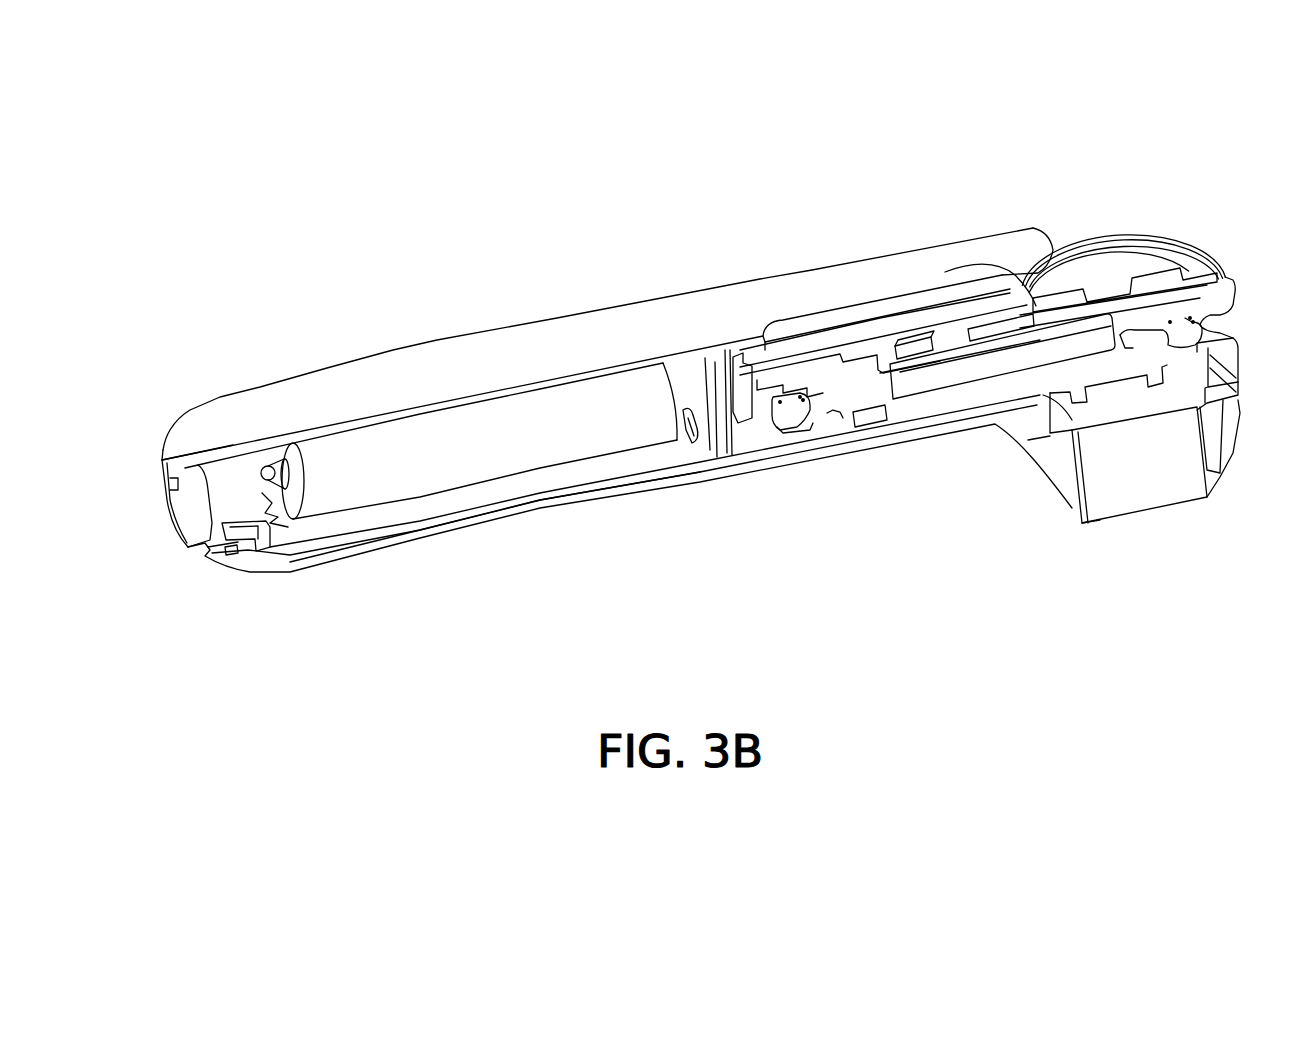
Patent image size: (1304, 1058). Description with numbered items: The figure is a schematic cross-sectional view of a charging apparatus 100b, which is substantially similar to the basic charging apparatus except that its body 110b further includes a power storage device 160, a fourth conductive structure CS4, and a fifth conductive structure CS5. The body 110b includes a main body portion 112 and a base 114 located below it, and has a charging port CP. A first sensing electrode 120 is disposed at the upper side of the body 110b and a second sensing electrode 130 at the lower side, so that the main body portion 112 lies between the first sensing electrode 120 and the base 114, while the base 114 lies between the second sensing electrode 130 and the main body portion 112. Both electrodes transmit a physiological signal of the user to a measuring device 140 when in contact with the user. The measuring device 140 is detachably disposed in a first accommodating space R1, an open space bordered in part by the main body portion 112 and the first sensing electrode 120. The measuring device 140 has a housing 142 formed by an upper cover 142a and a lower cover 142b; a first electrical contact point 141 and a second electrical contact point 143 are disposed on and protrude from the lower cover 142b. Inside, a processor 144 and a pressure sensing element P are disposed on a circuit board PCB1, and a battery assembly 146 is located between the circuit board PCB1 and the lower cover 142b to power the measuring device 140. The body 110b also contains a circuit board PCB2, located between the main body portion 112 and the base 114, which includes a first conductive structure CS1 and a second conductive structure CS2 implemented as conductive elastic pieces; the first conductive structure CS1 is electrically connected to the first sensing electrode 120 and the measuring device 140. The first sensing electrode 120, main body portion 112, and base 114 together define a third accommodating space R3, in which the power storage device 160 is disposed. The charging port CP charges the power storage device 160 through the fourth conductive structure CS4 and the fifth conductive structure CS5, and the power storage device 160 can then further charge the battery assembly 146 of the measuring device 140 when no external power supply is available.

The charging apparatus 100b is at (1196, 701).
The body 110b is at (538, 515).
The main body portion 112 is at (176, 507).
The base 114 is at (322, 558).
The first sensing electrode 120 is at (490, 345).
The second sensing electrode 130 is at (1177, 480).
The measuring device 140 is at (1218, 296).
The first electrical contact point 141 is at (767, 420).
The housing 142 is at (967, 402).
The upper cover 142a is at (903, 350).
The lower cover 142b is at (1066, 365).
The second electrical contact point 143 is at (1222, 378).
The processor 144 is at (915, 352).
The battery assembly 146 is at (975, 368).
The power storage device 160 is at (405, 445).
The circuit board PCB1 is at (443, 527).
The circuit board PCB2 is at (1010, 343).
The charging port CP is at (214, 553).
The first conductive structure CS1 is at (787, 415).
The second conductive structure CS2 is at (883, 413).
The fourth conductive structure CS4 is at (248, 508).
The fifth conductive structure CS5 is at (690, 420).
The pressure sensing element P is at (1195, 268).
The first accommodating space R1 is at (992, 285).
The third accommodating space R3 is at (230, 492).